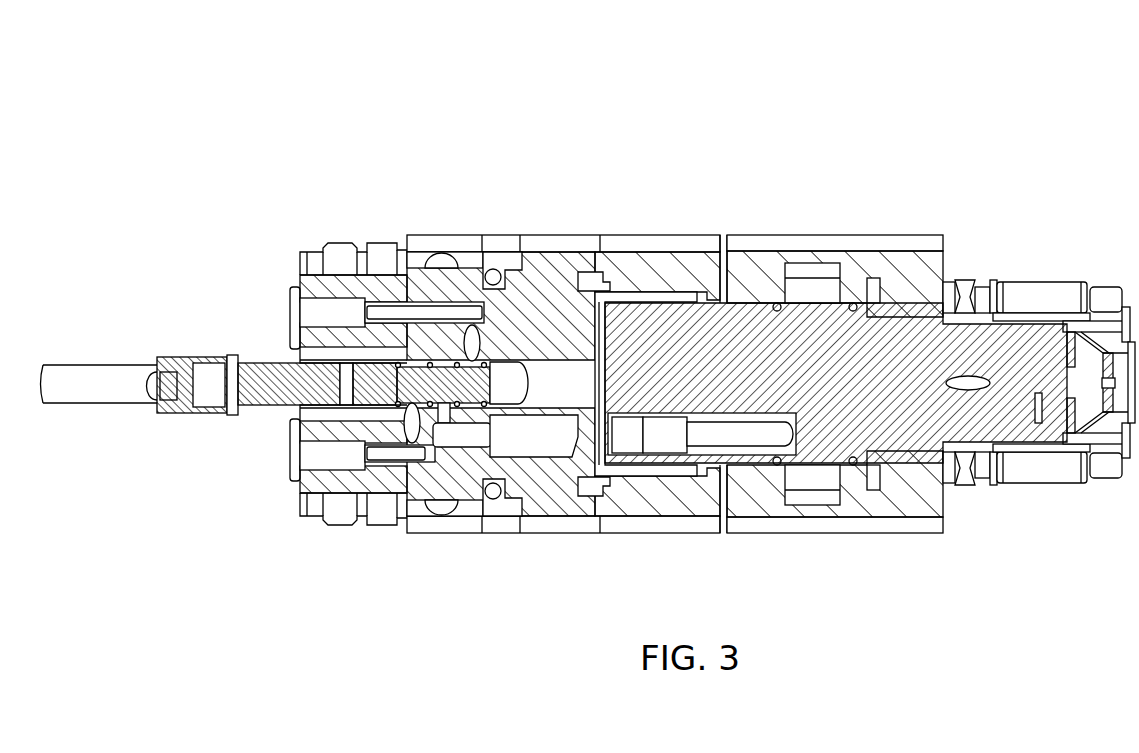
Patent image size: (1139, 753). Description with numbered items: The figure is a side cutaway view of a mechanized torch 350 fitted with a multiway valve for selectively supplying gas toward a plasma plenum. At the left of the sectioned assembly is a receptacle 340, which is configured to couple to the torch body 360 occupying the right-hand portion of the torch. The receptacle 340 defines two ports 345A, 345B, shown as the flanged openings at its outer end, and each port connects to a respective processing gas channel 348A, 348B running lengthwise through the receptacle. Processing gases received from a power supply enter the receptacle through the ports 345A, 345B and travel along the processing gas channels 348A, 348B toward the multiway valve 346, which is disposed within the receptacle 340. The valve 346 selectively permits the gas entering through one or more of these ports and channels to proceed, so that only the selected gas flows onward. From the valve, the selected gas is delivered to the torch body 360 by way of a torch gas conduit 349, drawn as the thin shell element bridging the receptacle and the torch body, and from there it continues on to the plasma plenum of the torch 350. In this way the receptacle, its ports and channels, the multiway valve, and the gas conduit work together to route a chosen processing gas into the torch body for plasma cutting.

The mechanized torch 350 is at (232, 117).
The receptacle 340 is at (420, 280).
The port 345A is at (277, 462).
The port 345B is at (275, 311).
The multiway valve 346 is at (505, 346).
The processing gas channel 348A is at (400, 455).
The processing gas channel 348B is at (441, 314).
The torch gas conduit 349 is at (572, 458).
The torch body 360 is at (898, 360).